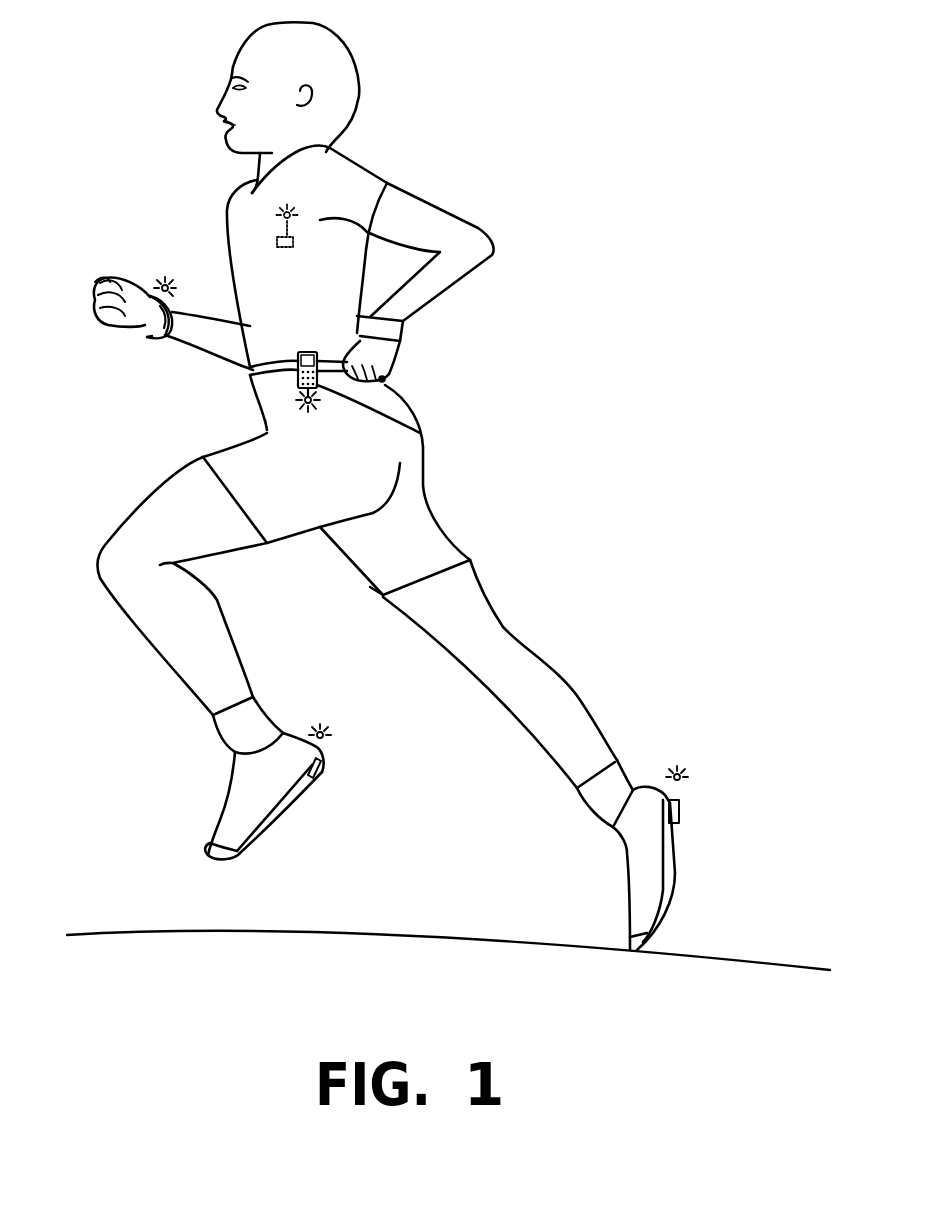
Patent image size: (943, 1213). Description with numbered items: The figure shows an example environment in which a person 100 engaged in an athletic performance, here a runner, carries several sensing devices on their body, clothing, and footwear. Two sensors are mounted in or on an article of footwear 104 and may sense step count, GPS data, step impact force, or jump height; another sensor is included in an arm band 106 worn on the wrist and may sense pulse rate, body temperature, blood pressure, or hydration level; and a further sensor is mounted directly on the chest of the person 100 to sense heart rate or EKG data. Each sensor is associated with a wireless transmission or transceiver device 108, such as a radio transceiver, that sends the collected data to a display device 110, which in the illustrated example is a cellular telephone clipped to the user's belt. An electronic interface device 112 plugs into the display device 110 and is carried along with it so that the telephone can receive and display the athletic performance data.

The person 100 is at (443, 116).
The article of footwear 104 is at (210, 782).
The arm band 106 is at (163, 355).
The wireless transmission or transceiver device 108 is at (280, 214).
The display device 110 is at (384, 382).
The electronic interface device 112 is at (420, 433).